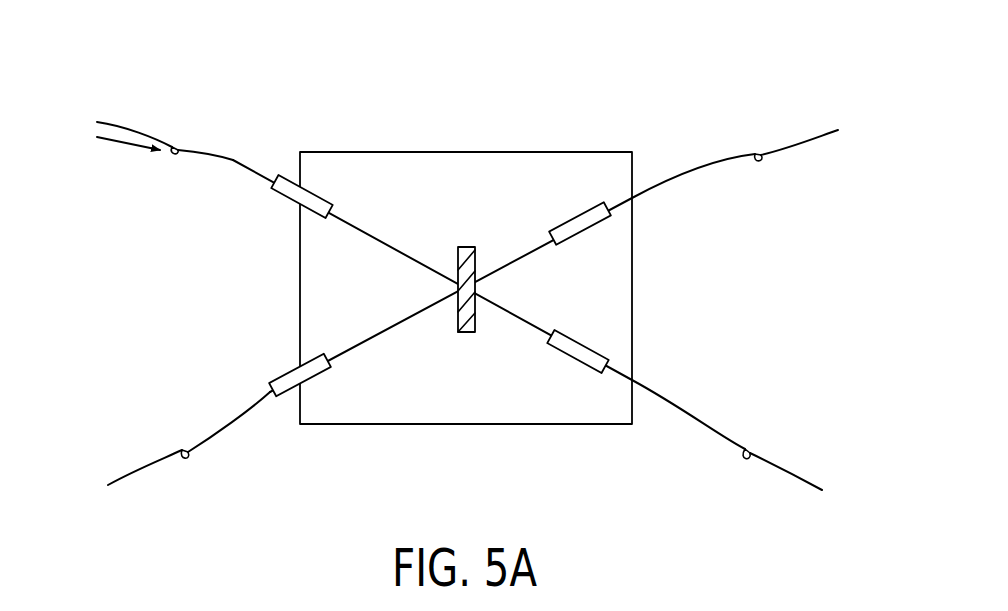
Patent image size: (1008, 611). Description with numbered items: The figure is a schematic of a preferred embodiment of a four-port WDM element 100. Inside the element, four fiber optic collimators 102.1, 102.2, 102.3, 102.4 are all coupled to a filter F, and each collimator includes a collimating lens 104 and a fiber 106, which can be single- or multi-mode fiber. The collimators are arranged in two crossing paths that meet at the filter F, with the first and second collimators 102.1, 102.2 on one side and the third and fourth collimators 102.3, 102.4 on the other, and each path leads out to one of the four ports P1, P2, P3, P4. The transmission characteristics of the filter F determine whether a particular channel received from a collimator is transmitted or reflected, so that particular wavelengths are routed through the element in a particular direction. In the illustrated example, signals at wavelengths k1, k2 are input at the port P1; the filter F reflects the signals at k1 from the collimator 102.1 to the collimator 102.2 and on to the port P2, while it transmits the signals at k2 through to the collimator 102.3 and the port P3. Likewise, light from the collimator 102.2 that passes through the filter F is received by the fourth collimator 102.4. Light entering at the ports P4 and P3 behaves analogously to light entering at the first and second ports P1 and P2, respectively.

The four-port WDM element 100 is at (618, 80).
The collimating lens 104 is at (300, 252).
The fiber 106 is at (240, 158).
The first fiber optic collimator 102.1 is at (318, 197).
The second fiber optic collimator 102.2 is at (318, 377).
The third fiber optic collimator 102.3 is at (557, 348).
The fourth fiber optic collimator 102.4 is at (560, 225).
The filter F is at (467, 245).
The first port P1 is at (132, 125).
The second port P2 is at (138, 463).
The third port P3 is at (792, 470).
The fourth port P4 is at (805, 132).
The wavelength channels k1, k2 is at (96, 138).